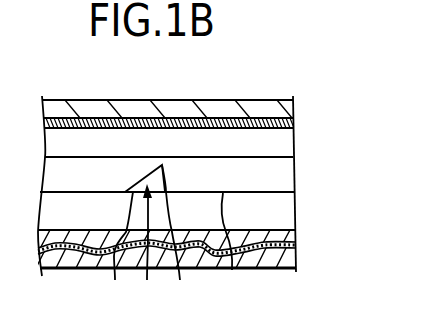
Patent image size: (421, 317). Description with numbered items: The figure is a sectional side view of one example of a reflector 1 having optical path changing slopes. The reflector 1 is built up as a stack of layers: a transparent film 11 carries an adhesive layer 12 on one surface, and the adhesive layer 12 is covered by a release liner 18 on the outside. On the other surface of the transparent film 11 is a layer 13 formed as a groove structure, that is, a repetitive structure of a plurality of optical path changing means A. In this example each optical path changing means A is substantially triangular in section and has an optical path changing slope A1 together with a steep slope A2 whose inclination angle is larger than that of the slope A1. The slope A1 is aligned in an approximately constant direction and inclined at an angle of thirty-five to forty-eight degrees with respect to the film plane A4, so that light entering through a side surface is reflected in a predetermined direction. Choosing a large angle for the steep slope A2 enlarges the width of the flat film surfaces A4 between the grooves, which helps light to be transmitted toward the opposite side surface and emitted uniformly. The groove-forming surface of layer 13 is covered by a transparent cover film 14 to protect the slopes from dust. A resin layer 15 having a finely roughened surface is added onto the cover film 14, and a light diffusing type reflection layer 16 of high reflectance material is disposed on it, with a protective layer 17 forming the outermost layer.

The reflector 1 is at (262, 86).
The transparent film 11 is at (277, 142).
The adhesive layer 12 is at (288, 124).
The layer of a structure of grooves 13 is at (282, 170).
The cover film 14 is at (282, 210).
The resin layer 15 is at (284, 238).
The light diffusing type reflection layer 16 is at (287, 248).
The protective layer 17 is at (290, 263).
The release liner 18 is at (283, 111).
The optical path changing means A is at (145, 245).
The optical path changing slope A1 is at (116, 249).
The steep slope A2 is at (177, 236).
The film plane A4 is at (233, 243).